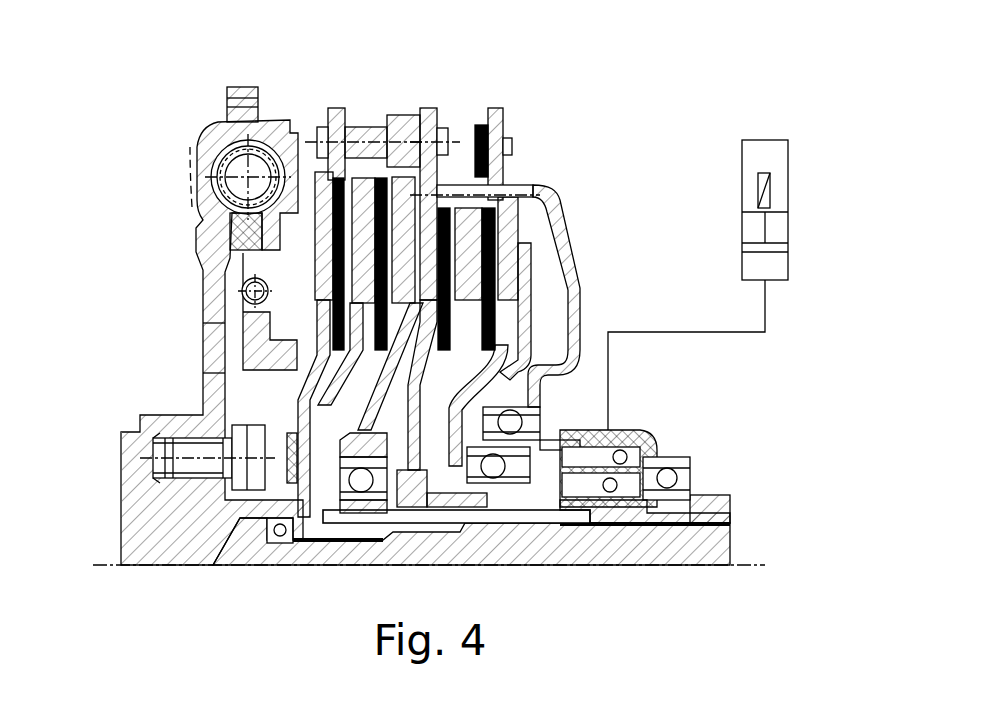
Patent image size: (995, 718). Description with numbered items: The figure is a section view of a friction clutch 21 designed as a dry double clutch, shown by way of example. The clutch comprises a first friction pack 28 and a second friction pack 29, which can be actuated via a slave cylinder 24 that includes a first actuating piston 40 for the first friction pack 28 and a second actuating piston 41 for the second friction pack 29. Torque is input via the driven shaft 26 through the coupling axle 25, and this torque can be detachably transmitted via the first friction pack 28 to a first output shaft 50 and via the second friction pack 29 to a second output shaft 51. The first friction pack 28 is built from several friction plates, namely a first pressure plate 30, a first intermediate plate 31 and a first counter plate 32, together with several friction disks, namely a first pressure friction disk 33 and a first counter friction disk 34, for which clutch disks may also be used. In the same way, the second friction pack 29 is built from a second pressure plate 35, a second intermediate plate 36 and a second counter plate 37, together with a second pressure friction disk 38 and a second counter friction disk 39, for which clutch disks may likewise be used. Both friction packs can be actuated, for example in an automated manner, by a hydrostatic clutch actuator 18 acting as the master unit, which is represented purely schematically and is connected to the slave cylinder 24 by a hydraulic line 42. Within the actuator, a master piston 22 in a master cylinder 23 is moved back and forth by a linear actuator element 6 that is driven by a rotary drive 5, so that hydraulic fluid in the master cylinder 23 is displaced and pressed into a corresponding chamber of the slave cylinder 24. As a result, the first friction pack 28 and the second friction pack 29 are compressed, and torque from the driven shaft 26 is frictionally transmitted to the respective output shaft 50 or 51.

The friction clutch 21 is at (150, 86).
The first friction pack 28 is at (268, 54).
The second friction pack 29 is at (422, 54).
The first counter plate 32 is at (323, 197).
The first counter friction disk 34 is at (338, 195).
The first intermediate plate 31 is at (362, 200).
The first pressure friction disk 33 is at (381, 200).
The first pressure plate 30 is at (399, 147).
The second counter plate 37 is at (428, 122).
The second counter friction disk 39 is at (443, 210).
The second intermediate plate 36 is at (468, 223).
The second pressure friction disk 38 is at (500, 225).
The second pressure plate 35 is at (538, 184).
The first actuating piston 40 is at (565, 227).
The second actuating piston 41 is at (535, 310).
The hydrostatic clutch actuator 18 is at (752, 136).
The rotary drive 5 is at (772, 185).
The linear actuator element 6 is at (760, 232).
The master piston 22 is at (742, 249).
The master cylinder 23 is at (790, 268).
The hydraulic line 42 is at (768, 312).
The driven shaft 26 is at (148, 416).
The coupling axle 25 is at (97, 562).
The second output shaft 51 is at (715, 500).
The first output shaft 50 is at (728, 540).
The slave cylinder 24 is at (640, 497).